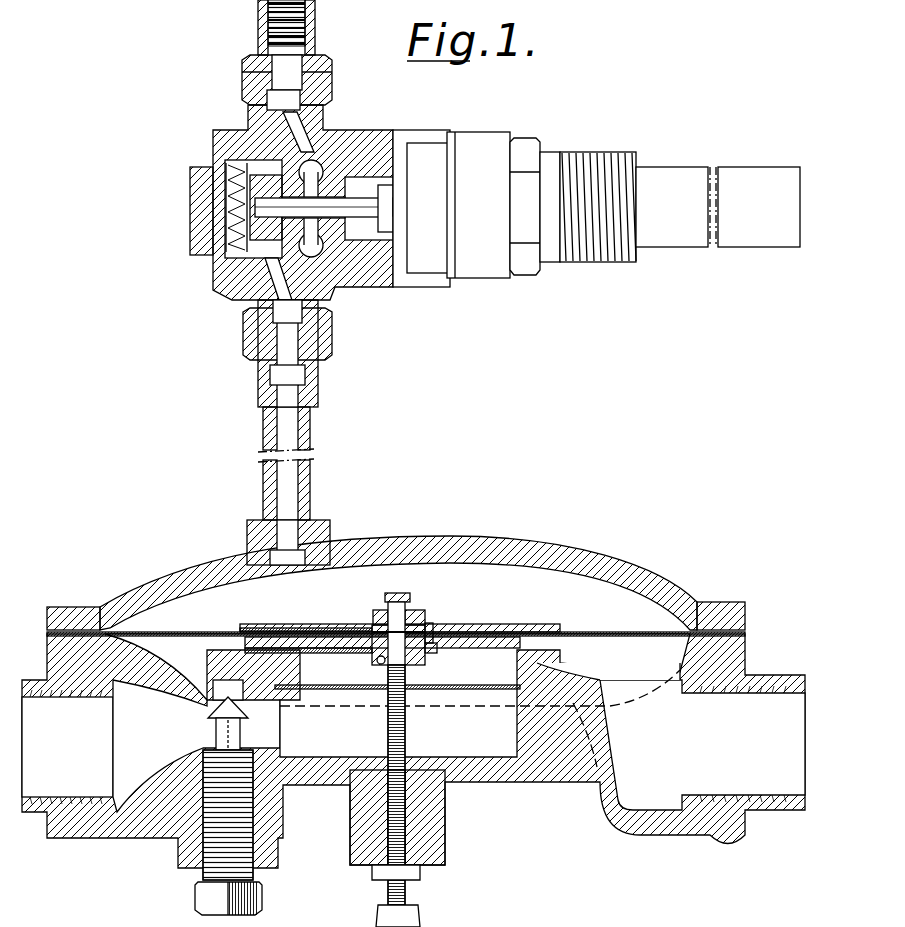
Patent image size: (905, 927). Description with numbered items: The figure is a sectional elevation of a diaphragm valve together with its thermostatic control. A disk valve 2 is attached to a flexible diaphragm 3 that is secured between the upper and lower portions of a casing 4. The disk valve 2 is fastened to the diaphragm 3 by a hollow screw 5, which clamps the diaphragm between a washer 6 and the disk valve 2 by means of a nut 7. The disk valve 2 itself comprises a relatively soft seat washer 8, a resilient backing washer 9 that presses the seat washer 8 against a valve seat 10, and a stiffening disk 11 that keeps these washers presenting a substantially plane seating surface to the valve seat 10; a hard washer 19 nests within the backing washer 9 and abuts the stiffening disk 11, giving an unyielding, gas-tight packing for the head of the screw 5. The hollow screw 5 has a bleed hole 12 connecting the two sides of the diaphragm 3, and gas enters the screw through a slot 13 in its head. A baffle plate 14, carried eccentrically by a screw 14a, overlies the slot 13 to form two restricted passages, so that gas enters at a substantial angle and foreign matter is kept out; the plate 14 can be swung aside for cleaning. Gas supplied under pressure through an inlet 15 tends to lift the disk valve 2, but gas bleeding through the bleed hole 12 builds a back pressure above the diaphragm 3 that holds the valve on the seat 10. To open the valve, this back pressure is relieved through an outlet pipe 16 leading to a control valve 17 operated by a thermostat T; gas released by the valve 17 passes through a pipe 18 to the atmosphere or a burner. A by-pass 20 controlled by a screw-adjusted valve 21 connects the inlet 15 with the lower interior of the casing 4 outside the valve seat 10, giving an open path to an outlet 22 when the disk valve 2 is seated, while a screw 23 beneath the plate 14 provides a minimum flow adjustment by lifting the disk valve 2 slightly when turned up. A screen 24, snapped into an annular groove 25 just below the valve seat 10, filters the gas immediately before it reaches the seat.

The disk valve 2 is at (482, 627).
The flexible diaphragm 3 is at (563, 630).
The casing 4 is at (663, 590).
The hollow screw 5 is at (398, 592).
The washer 6 is at (430, 621).
The nut 7 is at (417, 617).
The seat washer 8 is at (323, 650).
The resilient backing washer 9 is at (313, 634).
The valve seat 10 is at (533, 655).
The stiffening disk 11 is at (295, 632).
The bleed hole 12 is at (382, 603).
The slot 13 is at (393, 670).
The baffle plate 14 is at (420, 660).
The screw 14a is at (380, 664).
The inlet 15 is at (88, 748).
The outlet pipe 16 is at (290, 435).
The control valve 17 is at (243, 291).
The pipe 18 is at (316, 20).
The hard washer 19 is at (372, 632).
The by-pass 20 is at (233, 673).
The screw-adjusted valve 21 is at (213, 705).
The outlet 22 is at (773, 745).
The screw 23 is at (413, 908).
The screen 24 is at (473, 692).
The annular groove 25 is at (270, 693).
The thermostat T is at (476, 146).